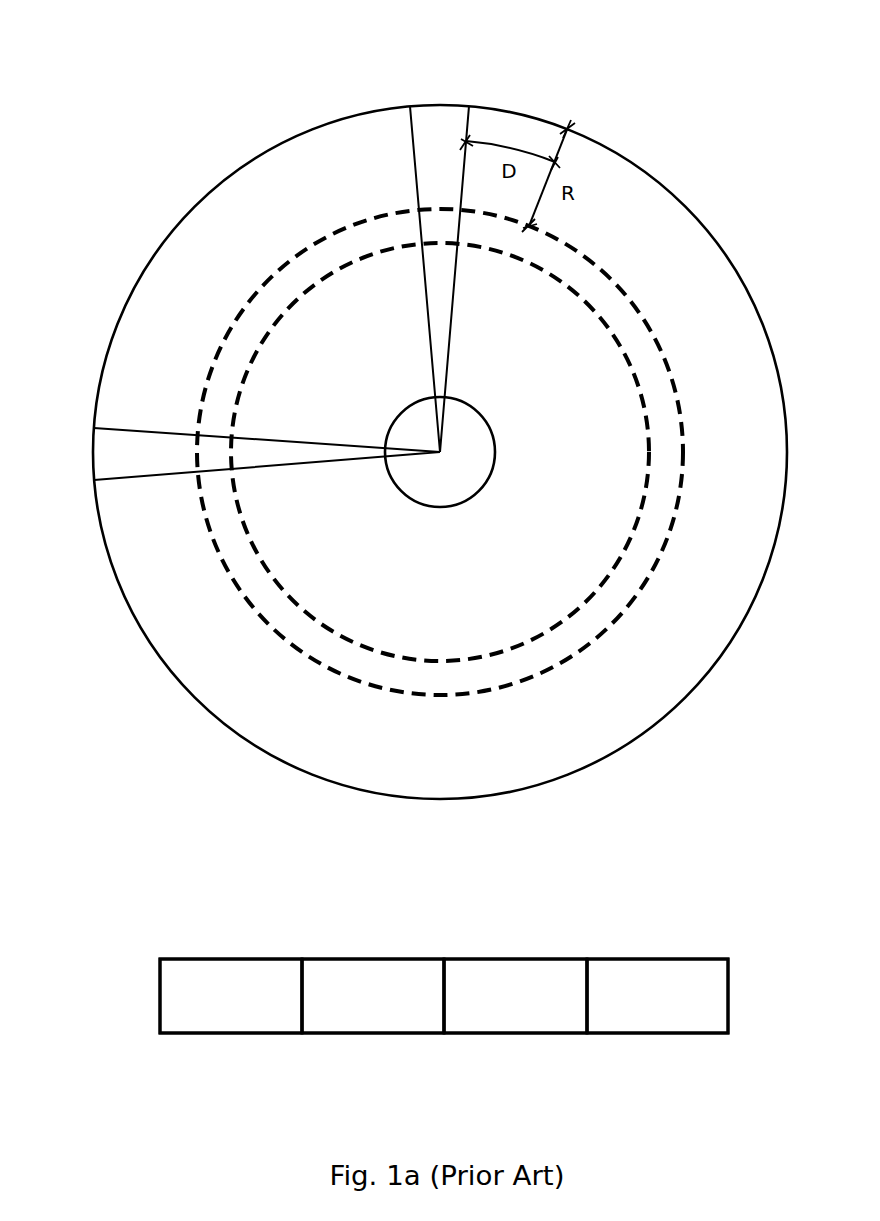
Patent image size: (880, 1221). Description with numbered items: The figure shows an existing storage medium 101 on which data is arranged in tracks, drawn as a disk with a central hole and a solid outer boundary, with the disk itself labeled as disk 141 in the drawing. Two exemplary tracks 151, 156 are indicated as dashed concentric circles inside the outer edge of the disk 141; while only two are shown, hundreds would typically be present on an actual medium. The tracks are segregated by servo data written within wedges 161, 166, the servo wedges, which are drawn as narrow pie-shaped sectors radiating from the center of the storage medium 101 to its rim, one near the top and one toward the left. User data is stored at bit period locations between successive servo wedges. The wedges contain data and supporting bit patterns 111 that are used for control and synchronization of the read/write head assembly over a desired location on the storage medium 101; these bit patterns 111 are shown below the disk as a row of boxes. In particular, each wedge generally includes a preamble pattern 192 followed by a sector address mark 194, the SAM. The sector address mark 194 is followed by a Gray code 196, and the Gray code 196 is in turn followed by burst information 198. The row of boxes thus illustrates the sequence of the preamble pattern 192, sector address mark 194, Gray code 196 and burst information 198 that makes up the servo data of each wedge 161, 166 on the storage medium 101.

The storage medium 101 is at (96, 52).
The magnetic disk 141 is at (679, 197).
The track 151 is at (600, 266).
The track 156 is at (606, 328).
The servo wedge 161 is at (443, 111).
The servo wedge 166 is at (98, 457).
The supporting bit patterns 111 is at (568, 932).
The preamble pattern 192 is at (231, 996).
The sector address mark 194 is at (373, 996).
The Gray code 196 is at (515, 996).
The burst information 198 is at (657, 996).